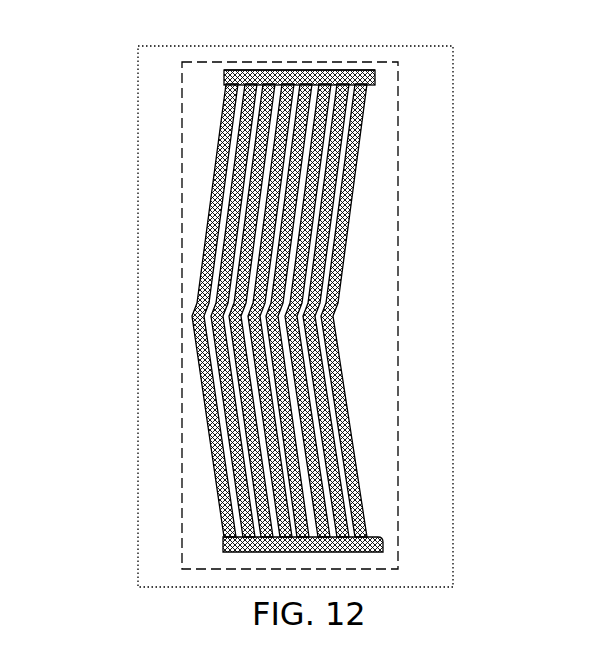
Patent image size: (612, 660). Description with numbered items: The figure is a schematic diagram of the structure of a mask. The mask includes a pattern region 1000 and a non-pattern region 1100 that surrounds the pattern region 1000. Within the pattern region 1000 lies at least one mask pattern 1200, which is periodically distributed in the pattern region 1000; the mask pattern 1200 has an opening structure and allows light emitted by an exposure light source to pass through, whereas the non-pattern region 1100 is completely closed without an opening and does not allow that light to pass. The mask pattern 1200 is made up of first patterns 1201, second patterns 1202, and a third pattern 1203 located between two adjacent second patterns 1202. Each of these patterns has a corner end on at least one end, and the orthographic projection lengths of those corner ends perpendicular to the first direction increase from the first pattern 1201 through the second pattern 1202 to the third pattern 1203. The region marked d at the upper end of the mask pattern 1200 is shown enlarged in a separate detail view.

The pattern region 1000 is at (398, 160).
The non-pattern region 1100 is at (425, 255).
The mask pattern 1200 is at (205, 277).
The first pattern 1201 is at (236, 172).
The second pattern 1202 is at (247, 218).
The third pattern 1203 is at (287, 263).
The enlarged region d is at (297, 71).